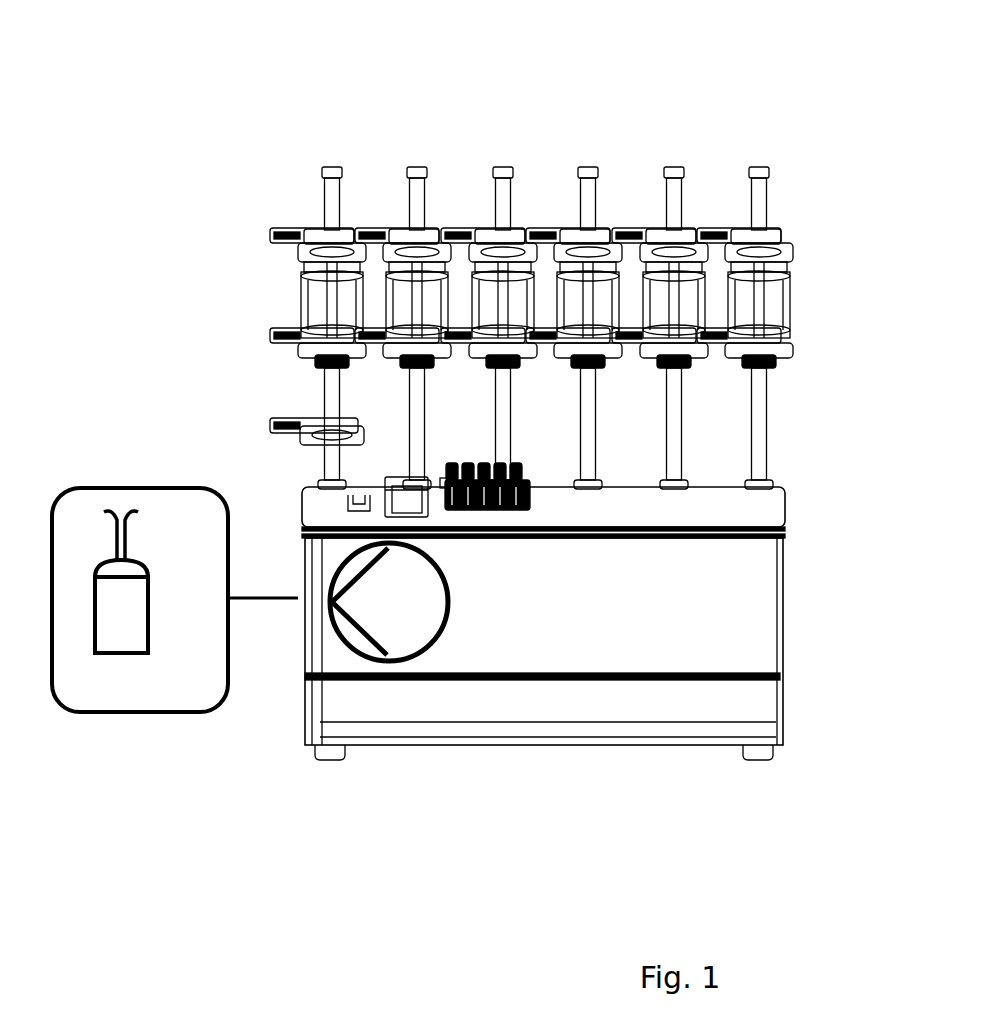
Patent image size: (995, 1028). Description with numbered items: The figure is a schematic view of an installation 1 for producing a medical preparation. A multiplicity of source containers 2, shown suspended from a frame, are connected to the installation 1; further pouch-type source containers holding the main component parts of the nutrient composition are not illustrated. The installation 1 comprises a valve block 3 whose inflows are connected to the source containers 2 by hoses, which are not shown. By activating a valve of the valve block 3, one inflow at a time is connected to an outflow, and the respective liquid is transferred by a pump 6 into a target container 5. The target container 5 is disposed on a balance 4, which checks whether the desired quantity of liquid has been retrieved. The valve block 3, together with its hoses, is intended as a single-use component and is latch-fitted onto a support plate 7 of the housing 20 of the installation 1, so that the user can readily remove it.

The installation 1 is at (450, 484).
The source containers 2 is at (326, 288).
The valve block 3 is at (493, 495).
The balance 4 is at (88, 668).
The target container 5 is at (120, 605).
The pump 6 is at (392, 617).
The support plate 7 is at (490, 495).
The housing 20 is at (660, 502).